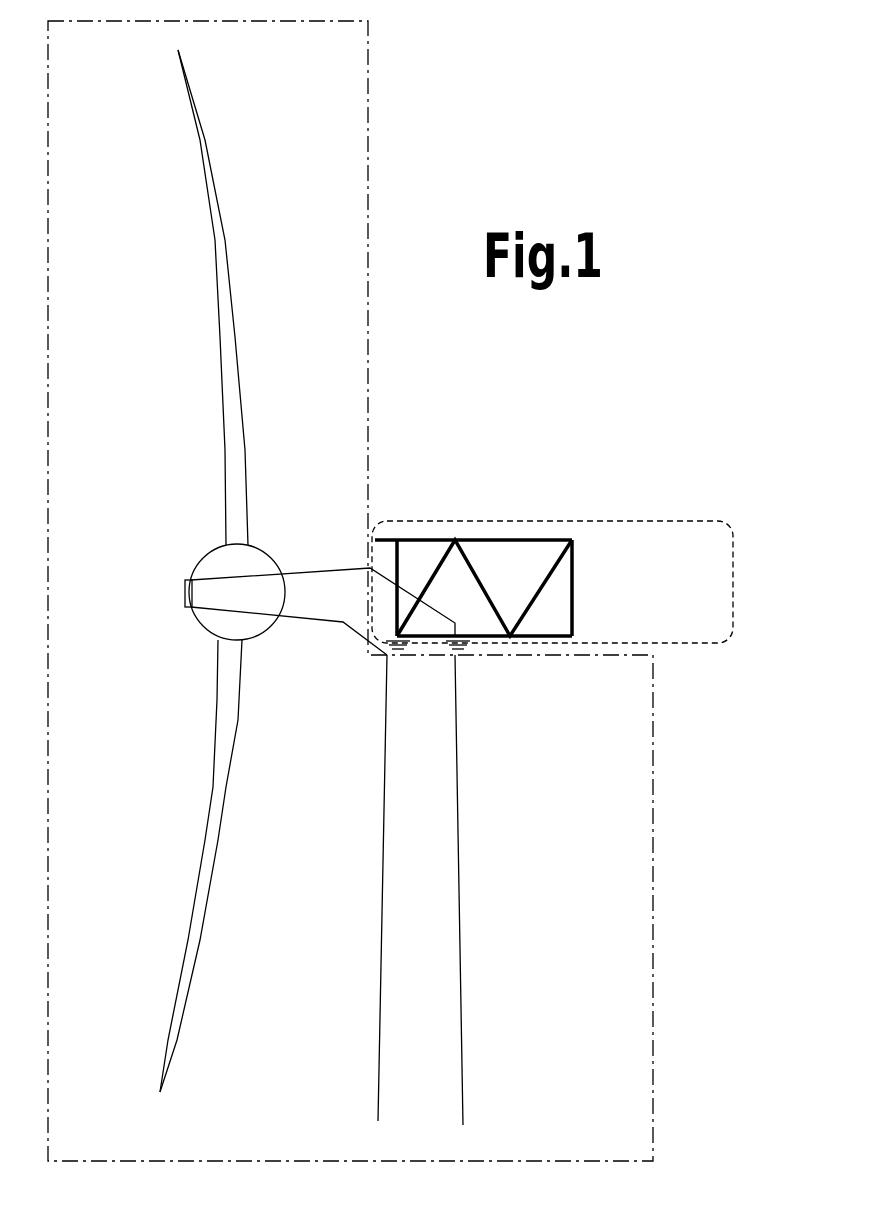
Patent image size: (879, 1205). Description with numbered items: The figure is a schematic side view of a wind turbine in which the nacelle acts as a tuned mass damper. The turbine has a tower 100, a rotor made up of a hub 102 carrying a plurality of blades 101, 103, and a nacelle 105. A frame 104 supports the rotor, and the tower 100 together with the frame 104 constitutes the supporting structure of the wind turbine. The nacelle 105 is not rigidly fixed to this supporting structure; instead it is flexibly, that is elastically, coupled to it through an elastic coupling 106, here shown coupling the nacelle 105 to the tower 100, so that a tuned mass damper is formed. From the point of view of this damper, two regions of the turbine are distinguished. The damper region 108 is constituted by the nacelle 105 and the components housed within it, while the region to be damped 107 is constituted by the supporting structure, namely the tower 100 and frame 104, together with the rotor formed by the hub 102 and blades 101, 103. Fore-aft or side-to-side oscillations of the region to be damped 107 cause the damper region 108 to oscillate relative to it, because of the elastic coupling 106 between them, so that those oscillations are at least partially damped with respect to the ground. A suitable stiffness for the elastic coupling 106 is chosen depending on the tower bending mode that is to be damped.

The tower 100 is at (433, 1020).
The blade 101 is at (223, 317).
The hub 102 is at (215, 562).
The blade 103 is at (215, 787).
The frame 104 is at (337, 587).
The nacelle 105 is at (555, 595).
The elastic coupling 106 is at (455, 645).
The region to be damped 107 is at (368, 100).
The damper region 108 is at (600, 520).